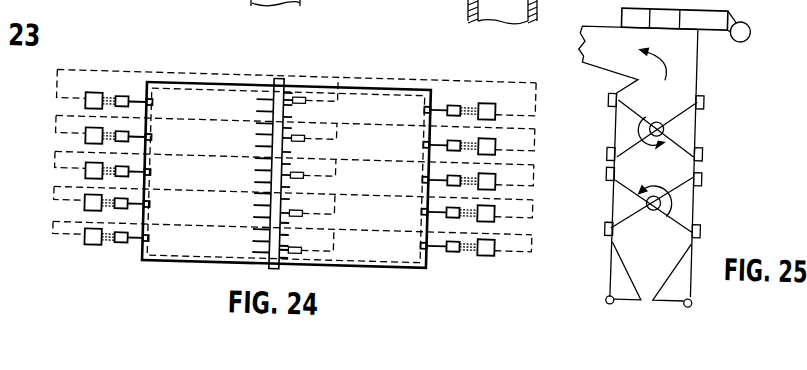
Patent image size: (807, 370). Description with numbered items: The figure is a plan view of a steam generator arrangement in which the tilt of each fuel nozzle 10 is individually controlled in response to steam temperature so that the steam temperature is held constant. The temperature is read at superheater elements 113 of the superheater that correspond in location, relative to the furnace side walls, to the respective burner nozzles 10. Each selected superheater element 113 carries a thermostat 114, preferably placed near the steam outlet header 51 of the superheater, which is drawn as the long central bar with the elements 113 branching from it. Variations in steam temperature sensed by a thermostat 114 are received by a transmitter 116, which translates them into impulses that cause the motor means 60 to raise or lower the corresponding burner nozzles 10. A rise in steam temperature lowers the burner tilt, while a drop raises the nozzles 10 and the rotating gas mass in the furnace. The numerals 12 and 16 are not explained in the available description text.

The fuel nozzle 10 is at (154, 136).
The terminal connector 12 is at (427, 174).
The housing 16 is at (357, 82).
The steam outlet header 51 is at (278, 76).
The motor means 60 is at (129, 97).
The superheater element 113 is at (261, 131).
The thermostat 114 is at (308, 134).
The transmitter 116 is at (87, 130).